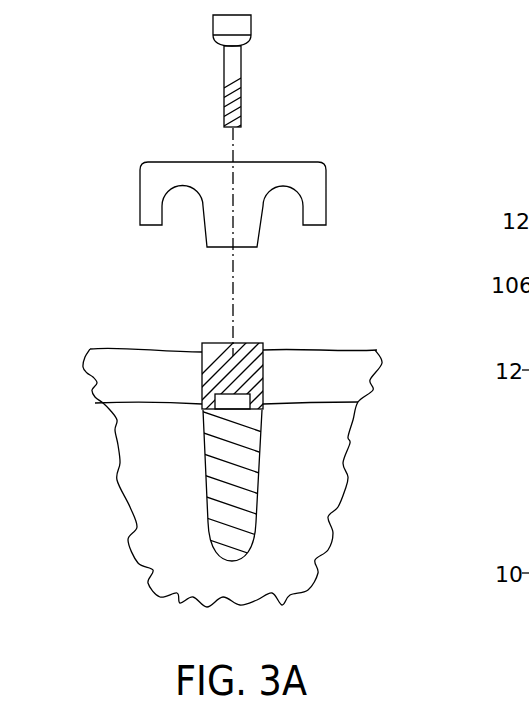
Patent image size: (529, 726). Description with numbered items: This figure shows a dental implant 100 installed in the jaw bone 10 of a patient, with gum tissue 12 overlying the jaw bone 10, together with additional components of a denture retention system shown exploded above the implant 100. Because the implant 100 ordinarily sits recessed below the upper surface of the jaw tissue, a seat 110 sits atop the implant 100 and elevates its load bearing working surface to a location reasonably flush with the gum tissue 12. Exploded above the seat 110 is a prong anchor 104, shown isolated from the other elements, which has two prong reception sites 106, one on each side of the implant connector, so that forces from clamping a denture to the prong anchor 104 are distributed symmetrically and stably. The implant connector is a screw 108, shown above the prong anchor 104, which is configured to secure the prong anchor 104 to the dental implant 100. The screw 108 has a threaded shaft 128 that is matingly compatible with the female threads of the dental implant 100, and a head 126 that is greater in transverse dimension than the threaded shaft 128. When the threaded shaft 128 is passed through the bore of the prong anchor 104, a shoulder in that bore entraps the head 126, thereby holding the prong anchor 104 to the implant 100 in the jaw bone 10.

The jaw bone 10 is at (150, 488).
The gum tissue 12 is at (128, 360).
The implant 100 is at (262, 486).
The prong anchor 104 is at (316, 205).
The prong reception sites 106 is at (183, 218).
The screw 108 is at (212, 74).
The seat 110 is at (252, 362).
The head 126 is at (246, 29).
The threaded shaft 128 is at (241, 73).